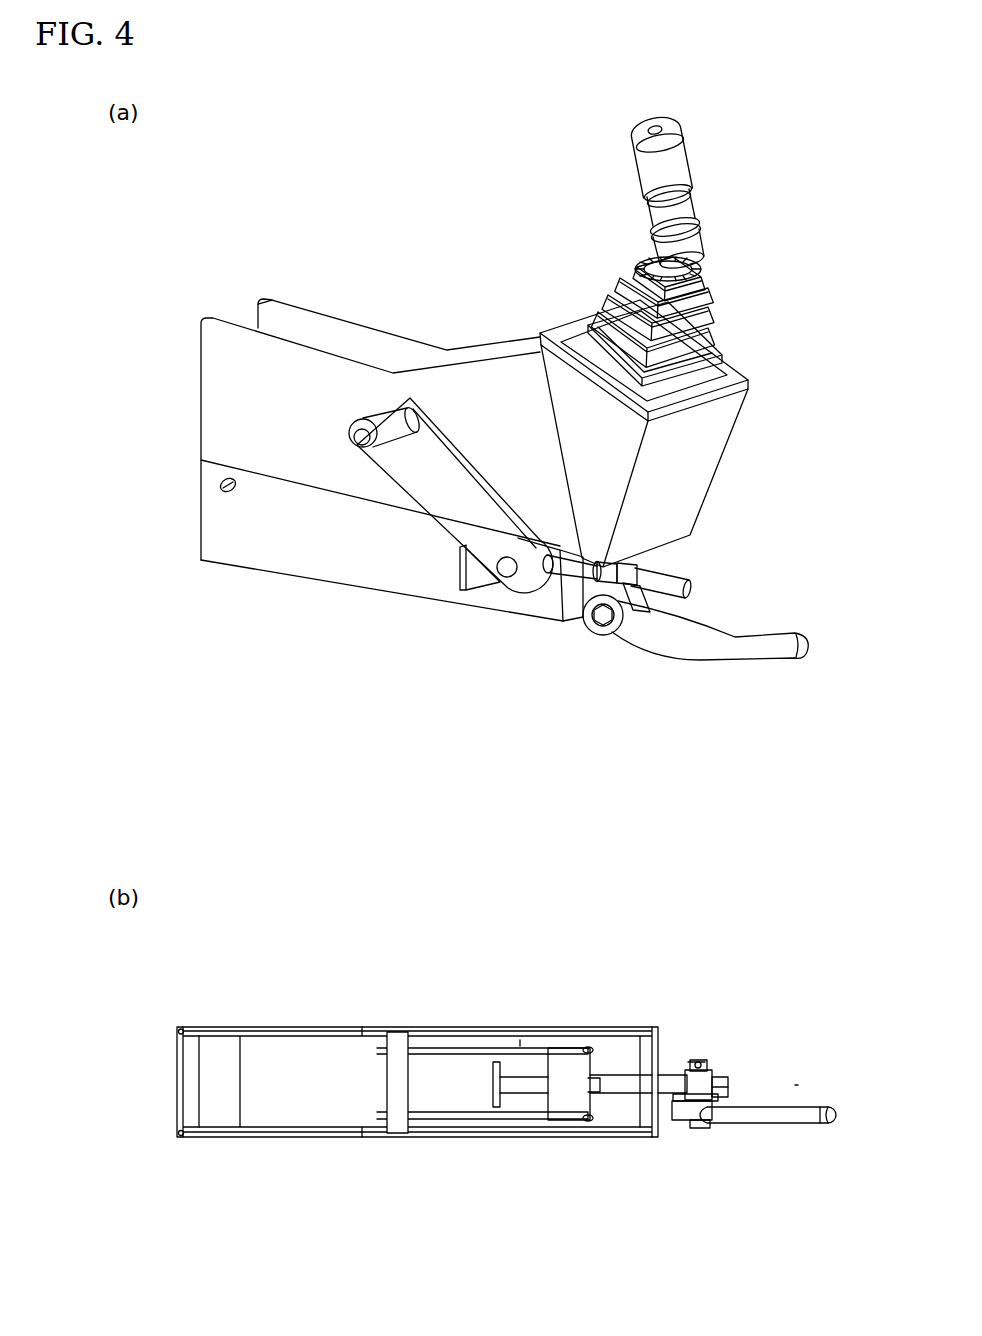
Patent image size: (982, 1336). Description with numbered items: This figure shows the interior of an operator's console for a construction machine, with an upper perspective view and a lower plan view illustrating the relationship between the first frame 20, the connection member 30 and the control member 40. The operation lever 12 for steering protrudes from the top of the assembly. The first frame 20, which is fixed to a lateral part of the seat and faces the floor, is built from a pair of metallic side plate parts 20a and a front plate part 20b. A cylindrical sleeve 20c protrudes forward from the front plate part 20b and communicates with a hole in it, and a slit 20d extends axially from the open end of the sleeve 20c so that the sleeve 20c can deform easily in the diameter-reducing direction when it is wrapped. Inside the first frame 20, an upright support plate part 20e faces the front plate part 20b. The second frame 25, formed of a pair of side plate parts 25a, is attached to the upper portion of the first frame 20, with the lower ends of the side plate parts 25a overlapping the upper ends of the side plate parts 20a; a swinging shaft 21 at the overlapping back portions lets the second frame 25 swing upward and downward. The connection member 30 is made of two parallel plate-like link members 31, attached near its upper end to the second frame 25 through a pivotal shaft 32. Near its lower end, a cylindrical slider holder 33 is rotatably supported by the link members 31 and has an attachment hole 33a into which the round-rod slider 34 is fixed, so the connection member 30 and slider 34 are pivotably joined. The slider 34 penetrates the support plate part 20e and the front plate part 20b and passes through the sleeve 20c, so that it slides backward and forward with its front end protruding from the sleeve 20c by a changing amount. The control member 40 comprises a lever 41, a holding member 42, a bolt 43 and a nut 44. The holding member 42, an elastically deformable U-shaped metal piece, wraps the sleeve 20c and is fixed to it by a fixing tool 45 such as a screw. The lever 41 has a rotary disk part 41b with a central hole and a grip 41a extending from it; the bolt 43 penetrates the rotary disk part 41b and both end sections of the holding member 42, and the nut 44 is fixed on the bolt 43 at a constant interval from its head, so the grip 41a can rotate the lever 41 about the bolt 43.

The operation lever 12 is at (648, 205).
The first frame 20 is at (253, 590).
The side plate parts 20a is at (205, 515).
The front plate part 20b is at (578, 605).
The sleeve 20c is at (633, 560).
The slit 20d is at (690, 1068).
The support plate part 20e is at (460, 570).
The swinging shaft 21 is at (222, 478).
The second frame 25 is at (420, 322).
The side plate parts 25a is at (268, 300).
The connection member 30 is at (497, 433).
The link members 31 is at (490, 467).
The pivotal shaft 32 is at (355, 425).
The slider holder 33 is at (547, 566).
The attachment hole 33a is at (592, 575).
The slider 34 is at (672, 577).
The control member 40 is at (805, 619).
The lever 41 is at (652, 662).
The grip 41a is at (745, 665).
The rotary disk part 41b is at (652, 600).
The holding member 42 is at (630, 566).
The bolt 43 is at (604, 626).
The nut 44 is at (720, 1078).
The fixing tool 45 is at (700, 1062).